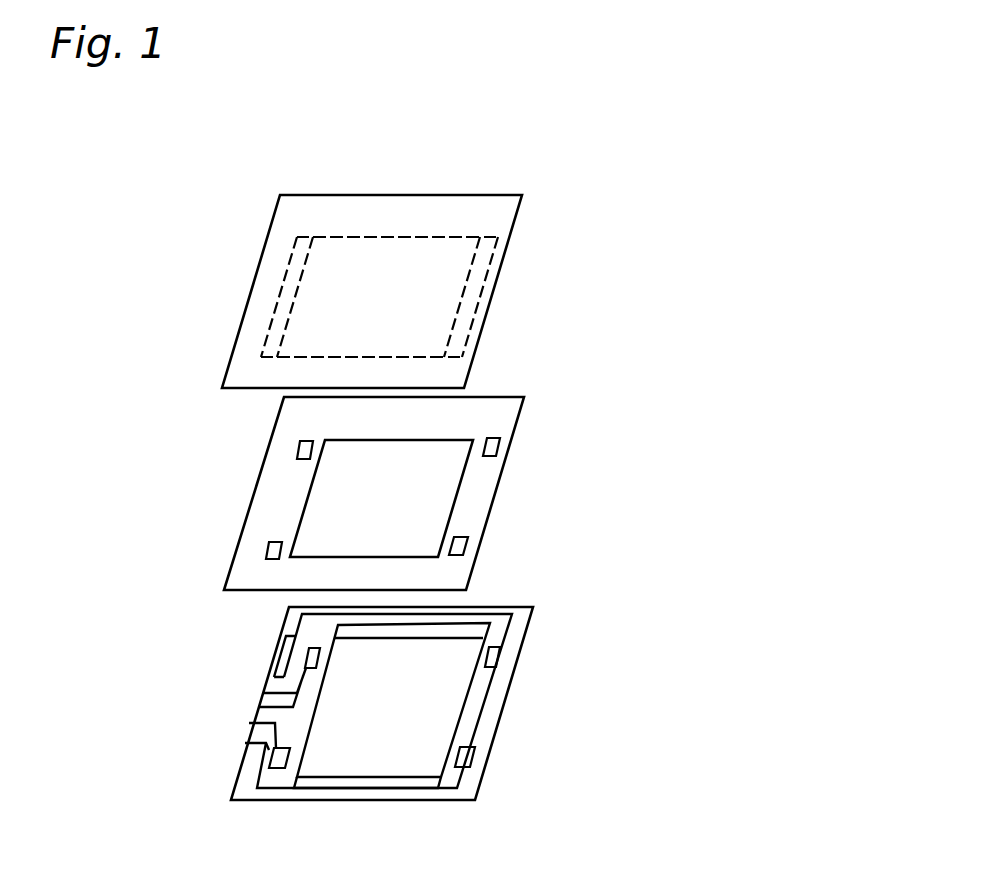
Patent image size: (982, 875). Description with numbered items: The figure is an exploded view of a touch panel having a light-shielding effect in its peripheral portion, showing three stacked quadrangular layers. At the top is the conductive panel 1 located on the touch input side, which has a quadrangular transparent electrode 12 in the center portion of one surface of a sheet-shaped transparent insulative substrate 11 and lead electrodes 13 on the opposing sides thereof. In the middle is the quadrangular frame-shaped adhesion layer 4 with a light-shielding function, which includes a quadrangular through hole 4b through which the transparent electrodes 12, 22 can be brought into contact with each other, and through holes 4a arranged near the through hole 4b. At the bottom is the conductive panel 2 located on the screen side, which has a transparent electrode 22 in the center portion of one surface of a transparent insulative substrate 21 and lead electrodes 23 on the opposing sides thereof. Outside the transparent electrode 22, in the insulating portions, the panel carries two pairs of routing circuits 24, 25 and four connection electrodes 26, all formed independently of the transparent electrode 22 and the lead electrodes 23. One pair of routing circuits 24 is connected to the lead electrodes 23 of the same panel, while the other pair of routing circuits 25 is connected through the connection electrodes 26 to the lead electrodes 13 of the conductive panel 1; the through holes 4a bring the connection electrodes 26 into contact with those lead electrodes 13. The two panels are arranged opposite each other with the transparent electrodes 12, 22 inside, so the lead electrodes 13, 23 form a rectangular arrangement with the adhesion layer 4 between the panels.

The conductive panel 1 is at (456, 257).
The transparent insulative substrate 11 is at (523, 203).
The transparent electrode 12 is at (425, 315).
The lead electrodes 13 is at (485, 265).
The adhesion layer with a light-shielding function 4 is at (407, 483).
The through holes 4a is at (297, 450).
The through hole 4b is at (428, 455).
The conductive panel 2 is at (407, 718).
The transparent insulative substrate 21 is at (527, 630).
The transparent electrode 22 is at (353, 757).
The lead electrodes 23 is at (467, 632).
The routing circuits 24 is at (298, 655).
The routing circuits 25 is at (480, 718).
The connection electrodes 26 is at (312, 652).